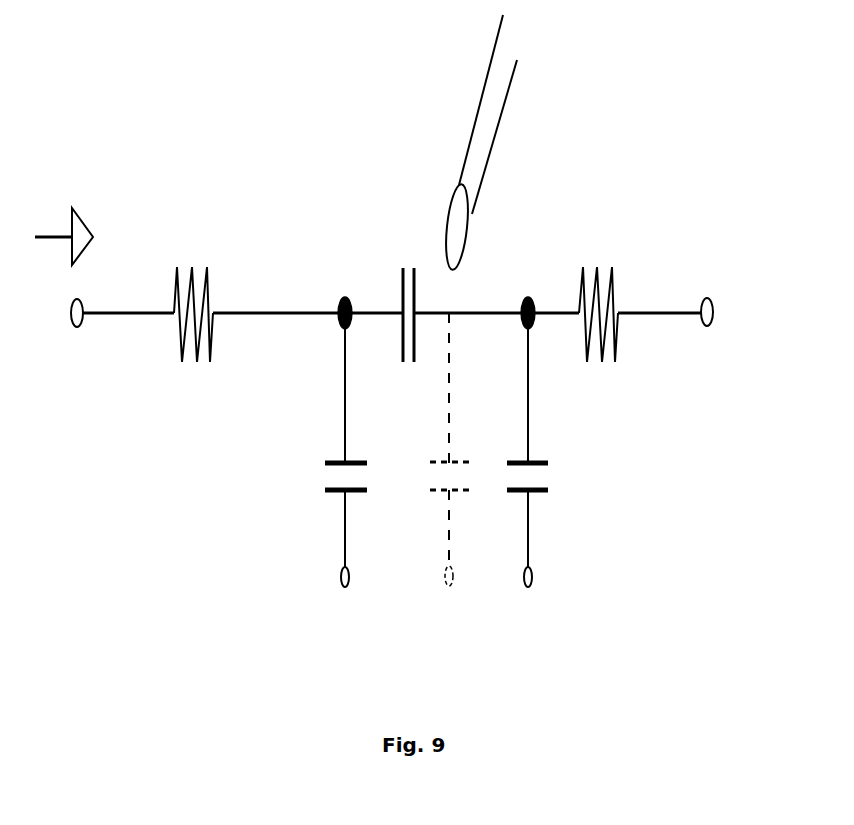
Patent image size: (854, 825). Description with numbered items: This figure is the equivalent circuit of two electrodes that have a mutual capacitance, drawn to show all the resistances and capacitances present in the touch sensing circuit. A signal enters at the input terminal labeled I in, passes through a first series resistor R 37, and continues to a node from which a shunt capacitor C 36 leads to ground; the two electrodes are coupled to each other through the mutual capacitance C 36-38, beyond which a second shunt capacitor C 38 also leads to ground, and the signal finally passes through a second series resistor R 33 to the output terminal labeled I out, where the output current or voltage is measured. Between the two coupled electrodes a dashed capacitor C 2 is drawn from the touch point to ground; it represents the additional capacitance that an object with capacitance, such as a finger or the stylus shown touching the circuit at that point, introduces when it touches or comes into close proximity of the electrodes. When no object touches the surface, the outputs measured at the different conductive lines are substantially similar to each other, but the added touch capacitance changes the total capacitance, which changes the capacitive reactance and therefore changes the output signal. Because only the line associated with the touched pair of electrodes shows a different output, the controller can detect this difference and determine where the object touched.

The resistor R37 37 is at (196, 285).
The resistor R33 33 is at (606, 279).
The capacitor C36 36 is at (327, 458).
The capacitor C38 38 is at (550, 458).
The coupling capacitor C36-38 36-38 is at (412, 289).
The capacitor C2 (stylus/finger capacitance) 2 is at (436, 449).
The input current Iin in is at (64, 196).
The output current Iout out is at (726, 317).
The element stylus is at (480, 143).